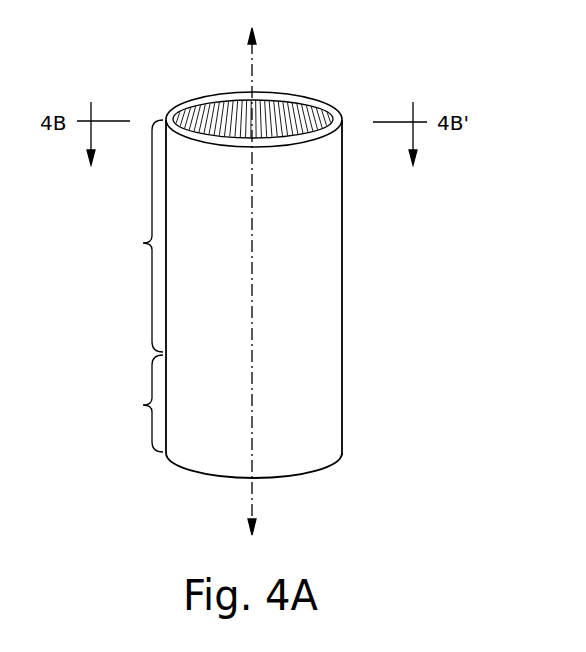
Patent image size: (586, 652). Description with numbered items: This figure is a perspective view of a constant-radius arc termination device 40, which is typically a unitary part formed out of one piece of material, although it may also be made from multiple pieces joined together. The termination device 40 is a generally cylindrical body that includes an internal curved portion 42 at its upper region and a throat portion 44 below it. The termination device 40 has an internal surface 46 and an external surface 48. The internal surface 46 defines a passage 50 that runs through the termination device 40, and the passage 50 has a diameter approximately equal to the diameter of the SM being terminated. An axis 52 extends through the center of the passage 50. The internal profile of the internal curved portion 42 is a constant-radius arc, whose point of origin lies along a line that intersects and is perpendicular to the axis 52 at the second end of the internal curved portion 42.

The termination device 40 is at (341, 86).
The internal curved portion 42 is at (135, 236).
The throat portion 44 is at (134, 403).
The internal surface 46 is at (228, 112).
The external surface 48 is at (315, 241).
The passage 50 is at (286, 104).
The axis 52 is at (253, 62).